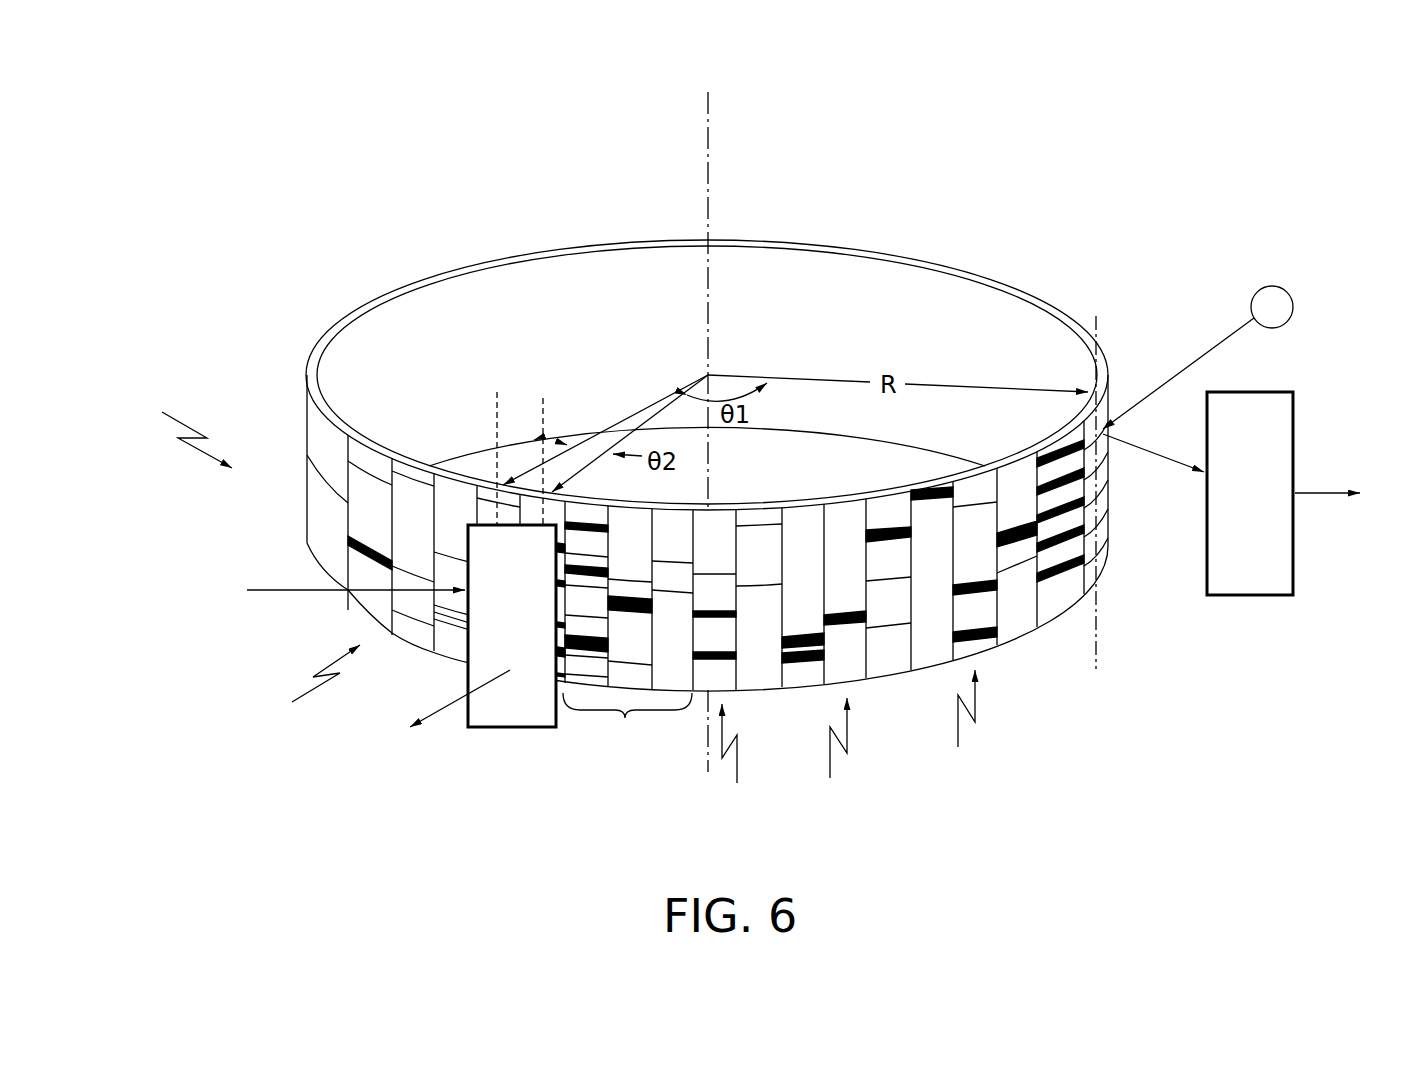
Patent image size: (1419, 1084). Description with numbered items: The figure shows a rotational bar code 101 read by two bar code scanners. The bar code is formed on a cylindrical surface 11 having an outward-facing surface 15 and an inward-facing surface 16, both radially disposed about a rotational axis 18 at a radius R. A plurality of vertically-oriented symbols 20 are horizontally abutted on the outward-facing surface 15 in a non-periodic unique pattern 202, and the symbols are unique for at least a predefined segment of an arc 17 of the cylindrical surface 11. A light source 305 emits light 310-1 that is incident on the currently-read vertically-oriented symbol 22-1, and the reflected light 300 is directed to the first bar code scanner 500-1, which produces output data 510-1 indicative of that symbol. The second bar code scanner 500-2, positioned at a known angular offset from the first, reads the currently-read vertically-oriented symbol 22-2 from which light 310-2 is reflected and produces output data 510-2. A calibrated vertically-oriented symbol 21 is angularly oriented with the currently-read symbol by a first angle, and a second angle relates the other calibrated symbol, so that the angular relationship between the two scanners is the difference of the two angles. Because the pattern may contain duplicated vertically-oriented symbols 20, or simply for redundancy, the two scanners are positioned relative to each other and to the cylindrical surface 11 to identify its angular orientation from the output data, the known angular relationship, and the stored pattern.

The cylindrical surface 11 is at (307, 522).
The outward-facing surface 15 is at (307, 437).
The inward-facing surface 16 is at (382, 332).
The arc 17 is at (626, 720).
The rotational axis 18 is at (708, 175).
The vertically-oriented symbols 20 is at (849, 746).
The calibrated vertically-oriented symbol 21 is at (496, 410).
The currently-read vertically-oriented symbol 22-1 is at (1098, 632).
The currently-read vertically-oriented symbol 22-2 is at (545, 412).
The rotational bar code 101 is at (300, 686).
The non-periodic unique pattern 202 is at (167, 428).
The reflected light 300 is at (1153, 457).
The light source 305 is at (1278, 286).
The light 310-1 is at (1213, 350).
The light 310-2 is at (278, 591).
The first bar code scanner 500-1 is at (1295, 432).
The second bar code scanner 500-2 is at (527, 728).
The output data 510-1 is at (1324, 497).
The output data 510-2 is at (447, 712).